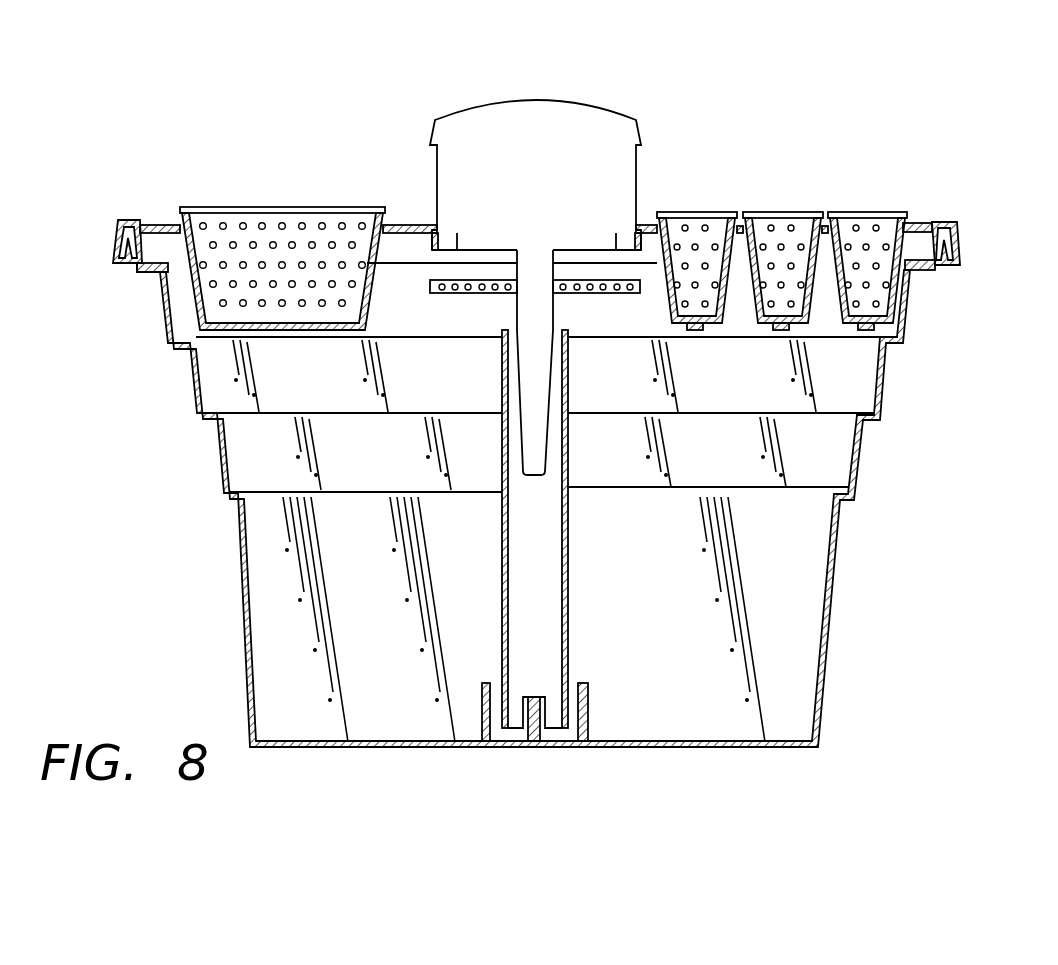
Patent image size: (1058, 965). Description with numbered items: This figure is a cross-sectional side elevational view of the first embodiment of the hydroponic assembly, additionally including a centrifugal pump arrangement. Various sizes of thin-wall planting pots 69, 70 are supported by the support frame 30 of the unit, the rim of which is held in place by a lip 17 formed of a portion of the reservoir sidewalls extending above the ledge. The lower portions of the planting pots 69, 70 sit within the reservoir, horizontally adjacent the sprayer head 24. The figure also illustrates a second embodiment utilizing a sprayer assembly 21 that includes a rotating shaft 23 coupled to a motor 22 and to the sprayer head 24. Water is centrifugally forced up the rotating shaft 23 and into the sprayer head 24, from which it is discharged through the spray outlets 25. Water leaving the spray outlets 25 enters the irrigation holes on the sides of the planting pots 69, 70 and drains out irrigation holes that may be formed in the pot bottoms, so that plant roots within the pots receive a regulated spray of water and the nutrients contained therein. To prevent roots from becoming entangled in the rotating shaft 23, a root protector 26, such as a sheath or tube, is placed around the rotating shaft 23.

The lip 17 is at (132, 265).
The sprayer assembly 21 is at (396, 132).
The motor 22 is at (584, 124).
The rotating shaft 23 is at (539, 447).
The sprayer head 24 is at (441, 300).
The spray outlets 25 is at (624, 298).
The root protector 26 is at (569, 546).
The support frame 30 is at (125, 218).
The planting pots 69 is at (707, 208).
The planting pot 70 is at (204, 203).